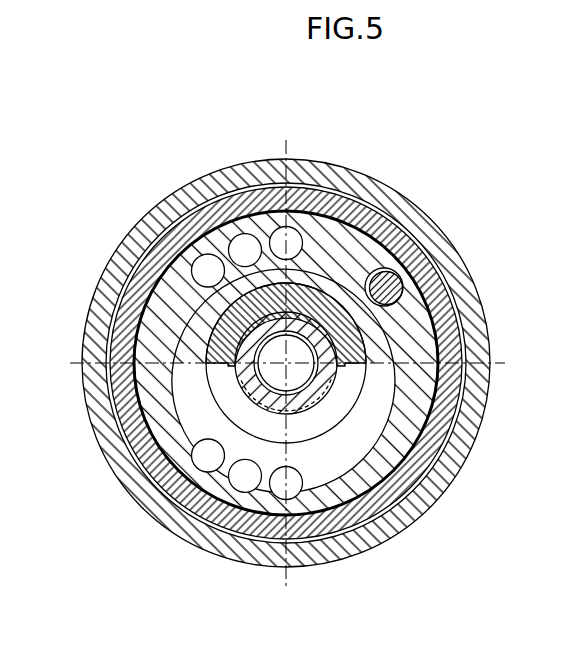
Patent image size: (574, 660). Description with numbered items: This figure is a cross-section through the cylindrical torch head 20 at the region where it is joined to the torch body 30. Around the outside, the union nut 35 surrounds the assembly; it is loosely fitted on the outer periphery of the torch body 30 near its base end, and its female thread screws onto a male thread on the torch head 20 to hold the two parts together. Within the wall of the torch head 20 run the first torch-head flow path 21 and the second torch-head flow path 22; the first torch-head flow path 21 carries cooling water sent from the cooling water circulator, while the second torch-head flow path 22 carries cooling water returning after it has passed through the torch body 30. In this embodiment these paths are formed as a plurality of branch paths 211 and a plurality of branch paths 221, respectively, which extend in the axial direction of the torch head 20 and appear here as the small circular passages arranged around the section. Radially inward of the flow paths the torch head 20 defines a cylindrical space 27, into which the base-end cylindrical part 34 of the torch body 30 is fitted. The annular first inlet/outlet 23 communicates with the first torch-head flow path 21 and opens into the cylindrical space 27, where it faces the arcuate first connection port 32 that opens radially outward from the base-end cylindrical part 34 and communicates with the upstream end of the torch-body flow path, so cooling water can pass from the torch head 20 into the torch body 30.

The torch head 20 is at (455, 303).
The union nut 35 is at (158, 212).
The first connection port 32 is at (425, 472).
The first inlet/outlet 23 is at (340, 508).
The base-end cylindrical part 34 is at (212, 312).
The second torch-head flow path 22 is at (255, 198).
The branch paths 221 is at (285, 242).
The first torch-head flow path 21 is at (255, 532).
The branch paths 211 is at (283, 490).
The torch body 30 is at (203, 345).
The cylindrical space 27 is at (318, 297).